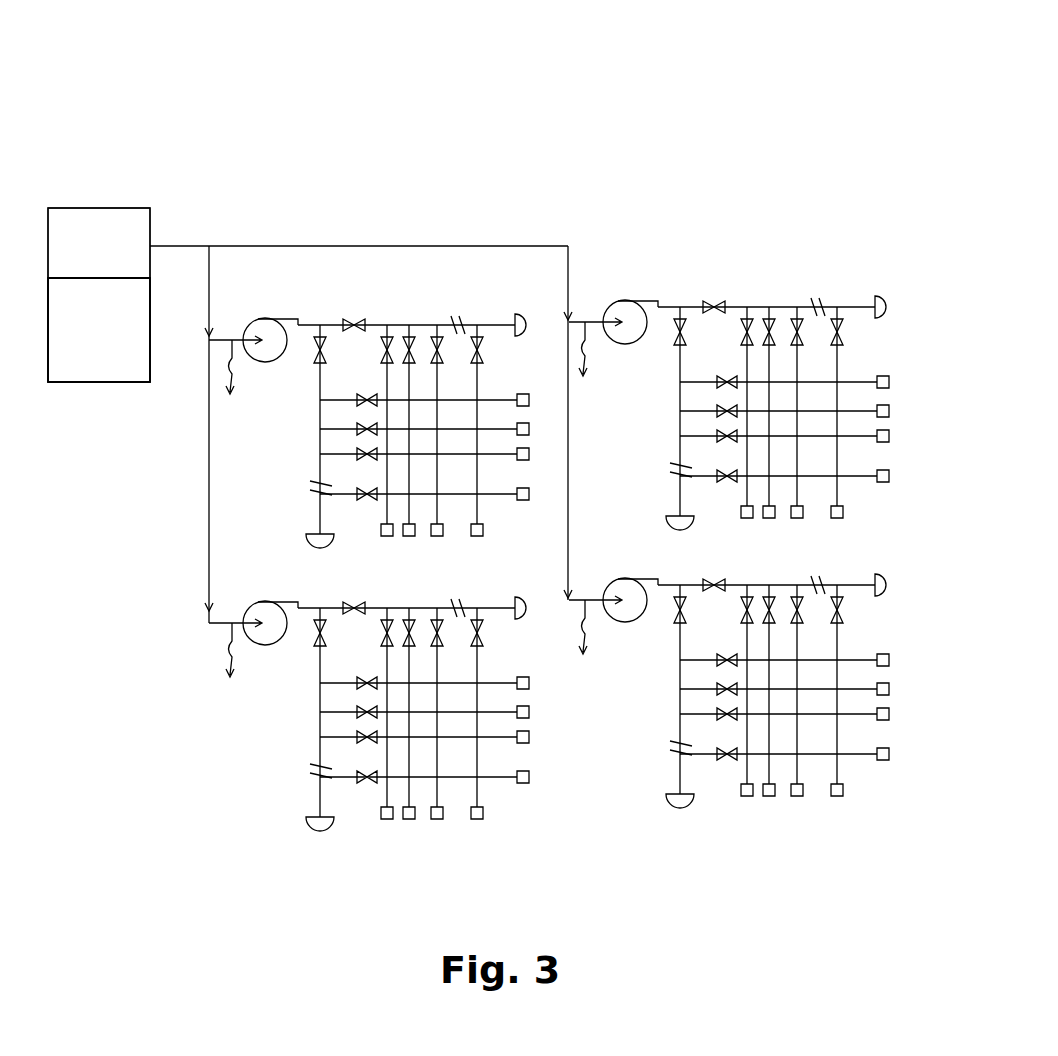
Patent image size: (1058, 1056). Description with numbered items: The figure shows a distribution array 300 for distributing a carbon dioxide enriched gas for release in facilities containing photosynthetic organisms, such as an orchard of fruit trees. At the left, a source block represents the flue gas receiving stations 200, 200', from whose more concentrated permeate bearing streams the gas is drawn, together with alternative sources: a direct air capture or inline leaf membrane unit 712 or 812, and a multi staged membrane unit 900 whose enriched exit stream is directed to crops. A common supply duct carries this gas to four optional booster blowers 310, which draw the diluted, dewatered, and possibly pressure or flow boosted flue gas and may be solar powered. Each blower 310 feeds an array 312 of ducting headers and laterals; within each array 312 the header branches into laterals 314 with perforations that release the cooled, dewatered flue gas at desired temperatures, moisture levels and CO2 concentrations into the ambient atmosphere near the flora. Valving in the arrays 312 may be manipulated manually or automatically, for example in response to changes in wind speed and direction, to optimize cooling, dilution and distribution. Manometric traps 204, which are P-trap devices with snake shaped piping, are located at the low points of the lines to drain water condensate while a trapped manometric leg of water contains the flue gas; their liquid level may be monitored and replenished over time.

The distribution array 300 is at (598, 160).
The flue gas receiving station 200 is at (99, 295).
The flue gas receiving station 200' is at (99, 243).
The direct air capture or inline leaf membrane unit 712 is at (99, 330).
The direct air capture or inline leaf membrane unit 812 is at (99, 330).
The multi staged membrane unit 900 is at (99, 330).
The booster blower 310 is at (280, 313).
The manometric trap 204 is at (237, 377).
The array of ducting headers and laterals 312 is at (436, 306).
The lateral 314 is at (482, 473).